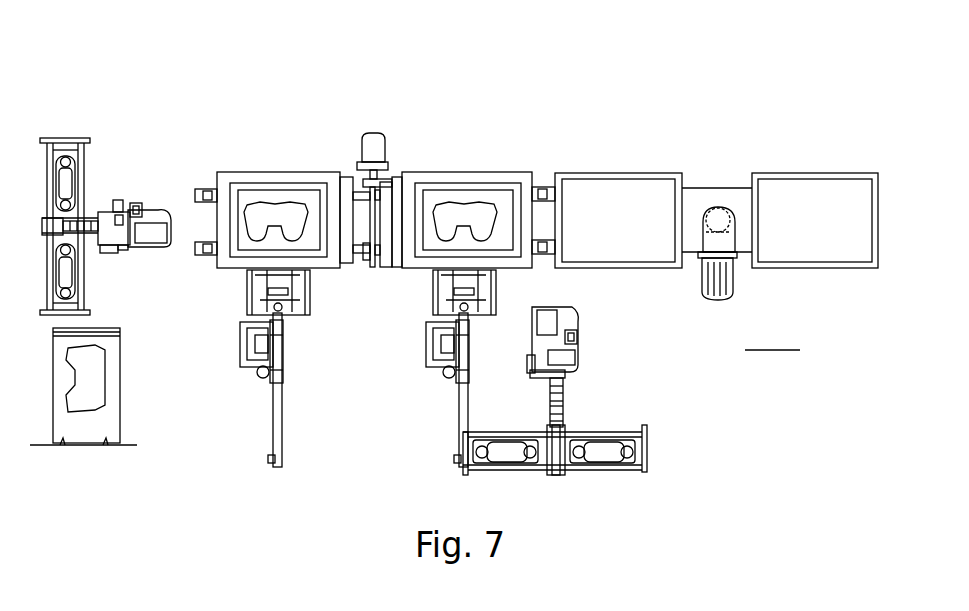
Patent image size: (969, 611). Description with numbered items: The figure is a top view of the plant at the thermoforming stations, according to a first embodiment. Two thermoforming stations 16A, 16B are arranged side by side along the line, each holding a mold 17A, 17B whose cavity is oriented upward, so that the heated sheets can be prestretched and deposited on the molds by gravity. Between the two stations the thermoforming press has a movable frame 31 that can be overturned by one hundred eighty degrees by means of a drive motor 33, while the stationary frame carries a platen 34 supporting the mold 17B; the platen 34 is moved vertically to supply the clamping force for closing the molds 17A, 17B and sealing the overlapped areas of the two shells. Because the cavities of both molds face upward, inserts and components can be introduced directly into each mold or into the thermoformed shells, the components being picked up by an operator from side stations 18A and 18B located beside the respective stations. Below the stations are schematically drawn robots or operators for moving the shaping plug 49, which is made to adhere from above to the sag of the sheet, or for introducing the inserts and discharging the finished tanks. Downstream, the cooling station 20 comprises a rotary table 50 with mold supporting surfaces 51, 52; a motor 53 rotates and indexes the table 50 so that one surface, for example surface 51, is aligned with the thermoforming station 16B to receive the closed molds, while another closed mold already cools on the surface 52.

The side station 18A is at (105, 209).
The thermoforming station 16A is at (328, 143).
The mold 17A is at (253, 196).
The movable frame 31 is at (299, 180).
The drive motor 33 is at (380, 132).
The thermoforming station 16B is at (441, 146).
The mold 17B is at (480, 196).
The platen 34 is at (521, 177).
The mold supporting surface 51 is at (632, 192).
The rotary table 50 is at (704, 196).
The mold supporting surface 52 is at (813, 190).
The motor 53 is at (703, 286).
The shaping plug 49 is at (257, 303).
The side station 18B is at (581, 391).
The cooling station 20 is at (772, 340).